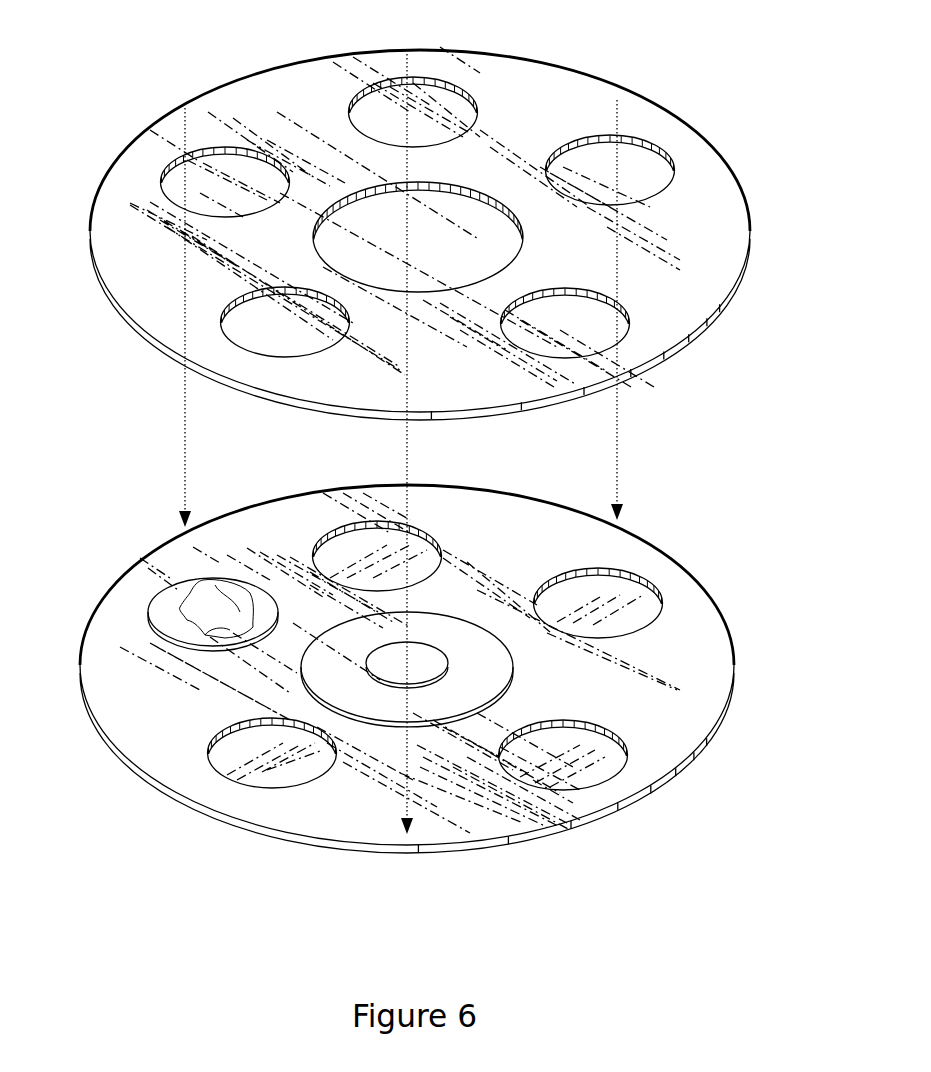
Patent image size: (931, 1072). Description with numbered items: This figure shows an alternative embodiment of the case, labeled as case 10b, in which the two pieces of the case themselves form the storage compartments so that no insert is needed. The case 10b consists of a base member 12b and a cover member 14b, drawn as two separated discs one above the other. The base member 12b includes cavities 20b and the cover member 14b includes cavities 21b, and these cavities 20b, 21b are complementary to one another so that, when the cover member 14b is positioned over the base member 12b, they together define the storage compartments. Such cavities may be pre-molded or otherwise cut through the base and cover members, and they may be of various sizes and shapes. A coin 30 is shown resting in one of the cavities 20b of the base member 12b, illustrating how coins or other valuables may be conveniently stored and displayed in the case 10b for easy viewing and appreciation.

The case 10b is at (114, 832).
The cover member 14b is at (744, 196).
The base member 12b is at (711, 581).
The cavities 21b is at (668, 172).
The cavities 20b is at (584, 792).
The coin 30 is at (178, 578).